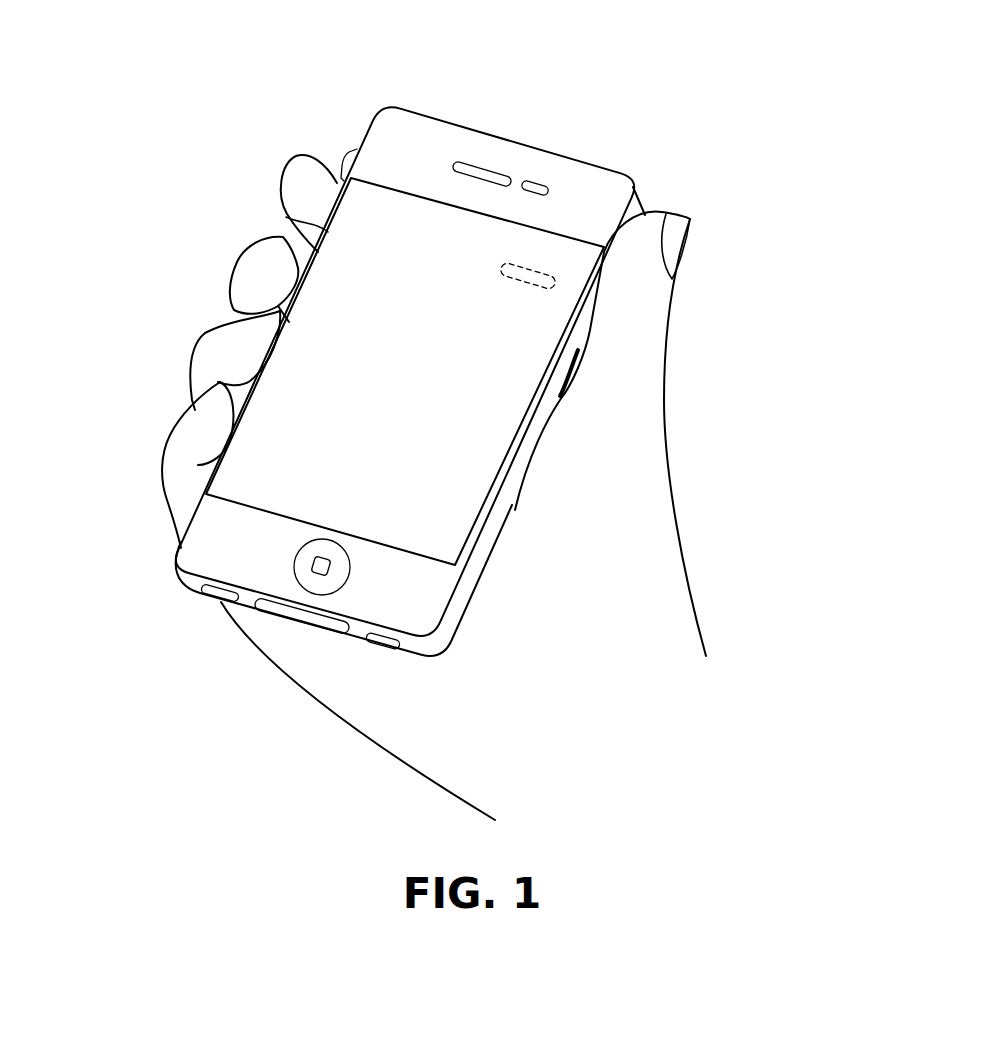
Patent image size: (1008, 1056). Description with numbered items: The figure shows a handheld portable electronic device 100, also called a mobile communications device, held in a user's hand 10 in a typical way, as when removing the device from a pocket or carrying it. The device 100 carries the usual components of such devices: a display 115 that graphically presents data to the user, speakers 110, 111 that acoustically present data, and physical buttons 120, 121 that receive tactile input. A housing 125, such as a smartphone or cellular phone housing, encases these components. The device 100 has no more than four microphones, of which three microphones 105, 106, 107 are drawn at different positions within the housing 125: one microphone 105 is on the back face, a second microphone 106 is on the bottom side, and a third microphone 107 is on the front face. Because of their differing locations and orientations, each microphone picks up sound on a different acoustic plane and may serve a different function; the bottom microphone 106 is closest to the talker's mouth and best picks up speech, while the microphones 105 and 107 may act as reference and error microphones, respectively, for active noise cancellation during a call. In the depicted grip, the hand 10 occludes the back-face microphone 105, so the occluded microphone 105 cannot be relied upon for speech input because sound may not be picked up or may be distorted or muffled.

The handheld portable electronic device 100 is at (757, 82).
The hand 10 is at (672, 518).
The microphone 105 is at (534, 271).
The microphone 106 is at (380, 648).
The microphone 107 is at (531, 182).
The speaker 110 is at (462, 163).
The speaker 111 is at (213, 601).
The display 115 is at (335, 257).
The physical button 120 is at (336, 150).
The physical button 121 is at (318, 566).
The housing 125 is at (474, 578).